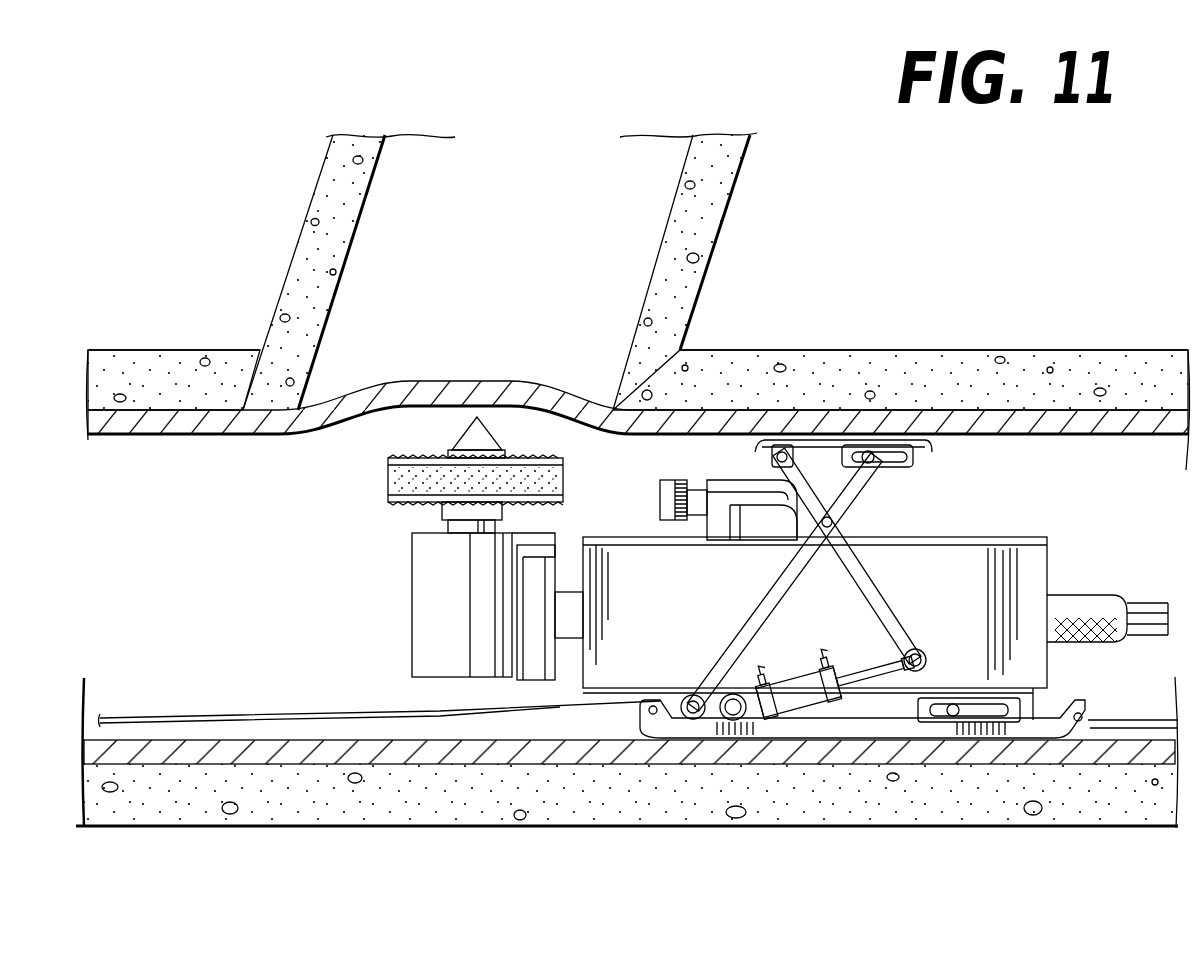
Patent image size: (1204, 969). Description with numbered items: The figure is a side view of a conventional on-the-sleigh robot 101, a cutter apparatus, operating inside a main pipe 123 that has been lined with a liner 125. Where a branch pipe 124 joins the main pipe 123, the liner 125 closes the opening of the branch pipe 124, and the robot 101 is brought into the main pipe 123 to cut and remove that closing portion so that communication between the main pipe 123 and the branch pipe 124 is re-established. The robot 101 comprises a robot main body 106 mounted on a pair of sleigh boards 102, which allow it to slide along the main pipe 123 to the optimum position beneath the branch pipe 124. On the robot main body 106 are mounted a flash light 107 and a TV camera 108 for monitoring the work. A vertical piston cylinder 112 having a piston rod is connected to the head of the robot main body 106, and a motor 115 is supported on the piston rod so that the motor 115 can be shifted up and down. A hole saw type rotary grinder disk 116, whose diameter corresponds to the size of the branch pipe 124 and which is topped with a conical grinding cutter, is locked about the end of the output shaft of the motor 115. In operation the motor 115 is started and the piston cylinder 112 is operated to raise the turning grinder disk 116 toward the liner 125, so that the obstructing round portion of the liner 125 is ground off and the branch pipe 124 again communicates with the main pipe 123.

The on-the-sleigh robot 101 is at (1000, 538).
The skid base 102 is at (882, 728).
The robot main body 106 is at (913, 560).
The flash light 107 is at (750, 546).
The TV camera 108 is at (672, 523).
The vertical piston cylinder 112 is at (537, 657).
The motor 115 is at (430, 645).
The rotary grinder disk 116 is at (388, 482).
The main pipe 123 is at (1025, 352).
The branch pipe 124 is at (703, 226).
The liner 125 is at (1138, 437).